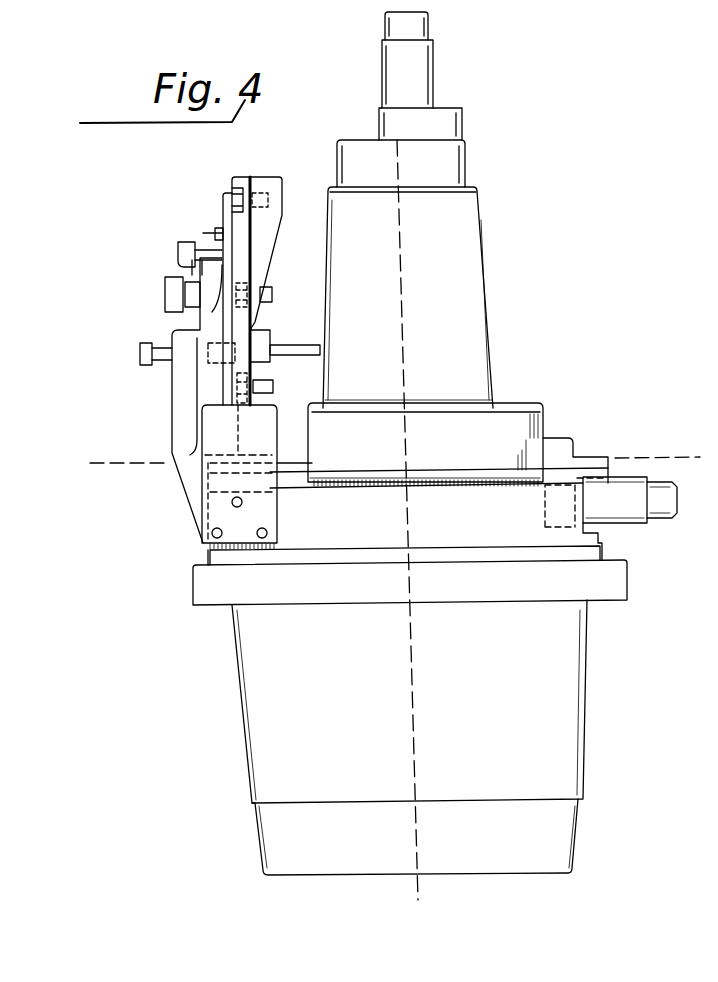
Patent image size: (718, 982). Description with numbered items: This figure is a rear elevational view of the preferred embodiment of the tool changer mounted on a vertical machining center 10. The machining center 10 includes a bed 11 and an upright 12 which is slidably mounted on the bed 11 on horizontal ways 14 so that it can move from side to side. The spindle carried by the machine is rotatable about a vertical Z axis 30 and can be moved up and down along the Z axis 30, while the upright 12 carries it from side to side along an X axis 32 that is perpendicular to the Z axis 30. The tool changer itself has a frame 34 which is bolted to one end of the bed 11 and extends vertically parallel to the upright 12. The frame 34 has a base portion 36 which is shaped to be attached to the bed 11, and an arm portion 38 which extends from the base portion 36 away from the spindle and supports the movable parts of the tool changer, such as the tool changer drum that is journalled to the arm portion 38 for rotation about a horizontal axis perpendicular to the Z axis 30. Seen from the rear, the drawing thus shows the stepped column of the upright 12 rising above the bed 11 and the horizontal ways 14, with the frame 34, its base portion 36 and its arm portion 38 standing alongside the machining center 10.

The vertical machining center 10 is at (512, 358).
The bed 11 is at (265, 666).
The upright 12 is at (470, 218).
The horizontal ways 14 is at (587, 455).
The Z axis 30 is at (405, 343).
The X axis 32 is at (650, 456).
The frame 34 is at (180, 392).
The base portion 36 is at (235, 513).
The arm portion 38 is at (232, 207).